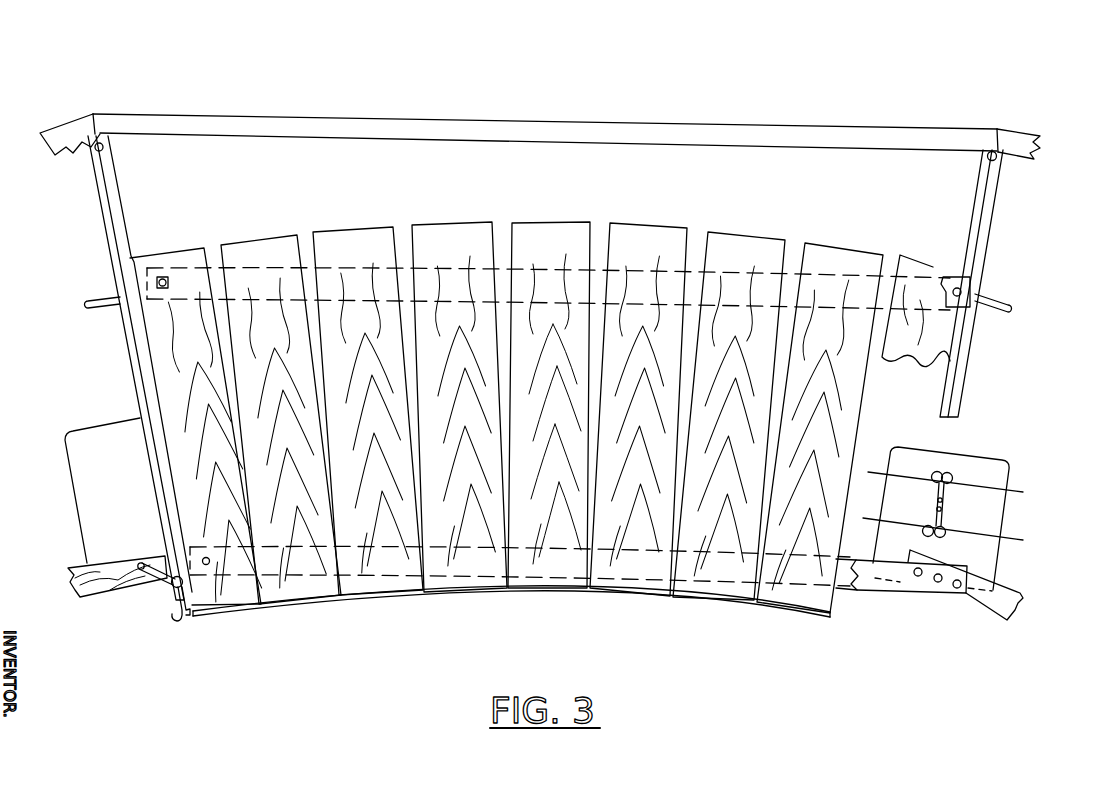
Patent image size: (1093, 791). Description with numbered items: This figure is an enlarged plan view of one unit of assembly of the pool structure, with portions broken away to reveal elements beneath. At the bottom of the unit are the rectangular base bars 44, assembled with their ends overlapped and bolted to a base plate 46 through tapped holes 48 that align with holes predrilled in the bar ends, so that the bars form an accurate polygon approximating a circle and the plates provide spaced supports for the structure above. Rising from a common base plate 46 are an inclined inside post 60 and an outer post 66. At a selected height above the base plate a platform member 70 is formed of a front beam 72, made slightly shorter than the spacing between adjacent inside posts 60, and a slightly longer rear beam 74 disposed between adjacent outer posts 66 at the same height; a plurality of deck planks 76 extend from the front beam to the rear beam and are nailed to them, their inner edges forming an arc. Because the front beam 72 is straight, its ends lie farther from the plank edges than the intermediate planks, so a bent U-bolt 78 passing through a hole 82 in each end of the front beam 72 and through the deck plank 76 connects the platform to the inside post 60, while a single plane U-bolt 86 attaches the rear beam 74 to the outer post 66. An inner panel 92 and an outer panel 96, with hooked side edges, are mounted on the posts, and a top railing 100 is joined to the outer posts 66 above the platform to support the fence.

The top railing 100 is at (614, 128).
The outer posts 66 is at (1001, 428).
The deck planks 76 is at (270, 246).
The rear beam 74 is at (947, 276).
The single plane U-bolt 86 is at (88, 311).
The base plate 46 is at (80, 464).
The outer panel 96 is at (1023, 493).
The inner panel 92 is at (1023, 540).
The front beam 72 is at (105, 596).
The platform member 70 is at (760, 637).
The bent U-bolt 78 is at (168, 588).
The inside posts 60 is at (182, 622).
The hole 82 is at (212, 570).
The base bars 44 is at (890, 593).
The tapped holes 48 is at (957, 588).